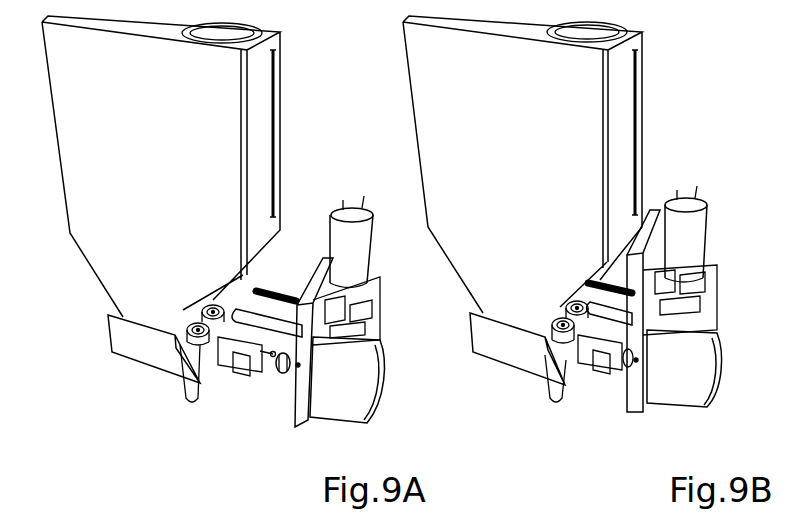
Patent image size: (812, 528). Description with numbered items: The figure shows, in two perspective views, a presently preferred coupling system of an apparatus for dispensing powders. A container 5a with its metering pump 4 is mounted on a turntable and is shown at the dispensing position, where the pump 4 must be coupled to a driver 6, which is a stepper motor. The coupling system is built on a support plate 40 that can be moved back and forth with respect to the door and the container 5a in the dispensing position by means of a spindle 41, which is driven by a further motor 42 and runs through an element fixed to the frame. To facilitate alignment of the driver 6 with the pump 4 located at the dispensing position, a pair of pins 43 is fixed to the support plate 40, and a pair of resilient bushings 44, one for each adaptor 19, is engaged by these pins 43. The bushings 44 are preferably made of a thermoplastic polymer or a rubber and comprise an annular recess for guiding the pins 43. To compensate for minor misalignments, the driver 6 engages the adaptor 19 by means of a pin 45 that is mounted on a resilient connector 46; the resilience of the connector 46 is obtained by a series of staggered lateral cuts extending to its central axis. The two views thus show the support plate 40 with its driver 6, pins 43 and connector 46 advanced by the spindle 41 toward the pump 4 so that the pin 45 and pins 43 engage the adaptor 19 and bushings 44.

In FIG. 9A, the container 5a is at (95, 235).
In FIG. 9B, the container 5a is at (433, 88).
In FIG. 9A, the metering pump 4 is at (123, 347).
In FIG. 9B, the metering pump 4 is at (540, 367).
In FIG. 9A, the resilient bushings 44 is at (210, 318).
In FIG. 9A, the adaptor 19 is at (230, 372).
In FIG. 9A, the pins 43 is at (258, 336).
In FIG. 9A, the pin 45 is at (268, 360).
In FIG. 9A, the resilient connector 46 is at (283, 373).
In FIG. 9A, the spindle 41 is at (275, 288).
In FIG. 9A, the motor 42 is at (355, 217).
In FIG. 9A, the support plate 40 is at (298, 382).
In FIG. 9A, the driver 6 is at (370, 402).
In FIG. 9B, the driver 6 is at (687, 395).